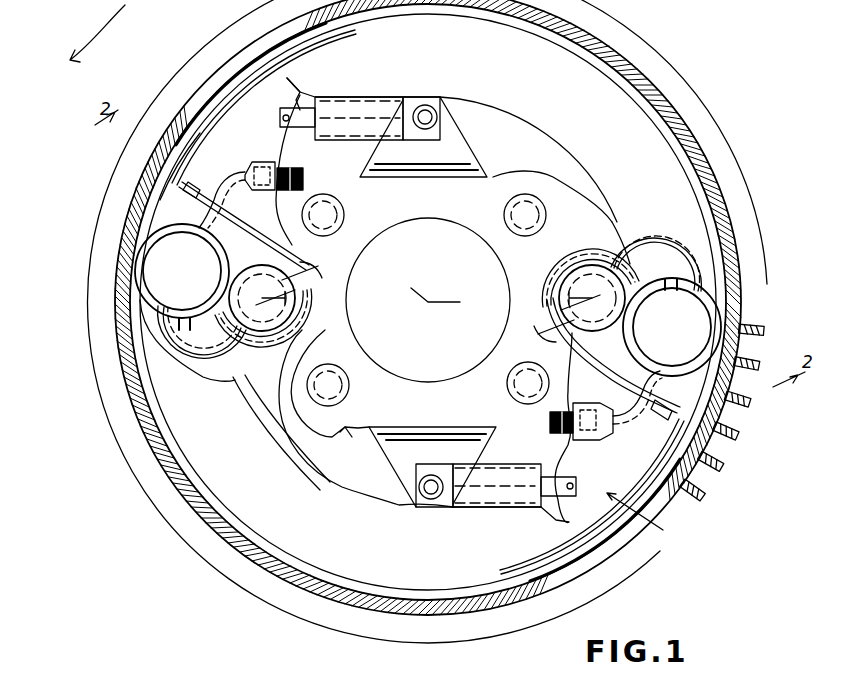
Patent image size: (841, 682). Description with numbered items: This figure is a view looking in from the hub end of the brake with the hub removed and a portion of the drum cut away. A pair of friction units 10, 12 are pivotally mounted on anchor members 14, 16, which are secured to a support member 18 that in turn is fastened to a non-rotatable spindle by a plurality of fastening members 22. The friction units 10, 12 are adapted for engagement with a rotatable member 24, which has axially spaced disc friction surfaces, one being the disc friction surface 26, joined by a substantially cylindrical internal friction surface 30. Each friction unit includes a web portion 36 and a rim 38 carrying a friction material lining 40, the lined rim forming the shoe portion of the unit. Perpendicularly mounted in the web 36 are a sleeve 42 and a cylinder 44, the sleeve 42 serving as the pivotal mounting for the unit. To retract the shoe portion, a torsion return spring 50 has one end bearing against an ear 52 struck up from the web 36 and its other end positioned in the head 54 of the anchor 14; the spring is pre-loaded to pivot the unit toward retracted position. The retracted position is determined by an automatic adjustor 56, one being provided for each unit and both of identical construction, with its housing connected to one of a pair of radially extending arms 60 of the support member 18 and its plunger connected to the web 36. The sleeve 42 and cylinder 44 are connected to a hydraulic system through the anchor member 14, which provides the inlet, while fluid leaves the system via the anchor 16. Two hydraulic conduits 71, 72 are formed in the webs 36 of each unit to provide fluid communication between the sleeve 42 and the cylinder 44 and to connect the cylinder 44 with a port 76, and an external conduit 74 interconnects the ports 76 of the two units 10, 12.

The friction unit 10 is at (233, 120).
The friction unit 12 is at (633, 500).
The anchor member 14 is at (315, 347).
The anchor member 16 is at (575, 305).
The support member 18 is at (345, 443).
The fastening members 22 is at (547, 213).
The rotatable member 24 is at (715, 150).
The disc friction surface 26 is at (648, 135).
The internal friction surface 30 is at (735, 232).
The web portion 36 is at (290, 78).
The rim 38 is at (200, 133).
The friction material lining 40 is at (246, 84).
The sleeve 42 is at (325, 305).
The cylinder 44 is at (142, 270).
The torsion return spring 50 is at (318, 262).
The ear 52 is at (430, 295).
The head 54 is at (578, 318).
The automatic adjustor 56 is at (368, 92).
The radially extending arms 60 is at (455, 133).
The hydraulic conduit 71 is at (205, 360).
The hydraulic conduit 72 is at (240, 225).
The external conduit 74 is at (305, 455).
The port 76 is at (283, 165).